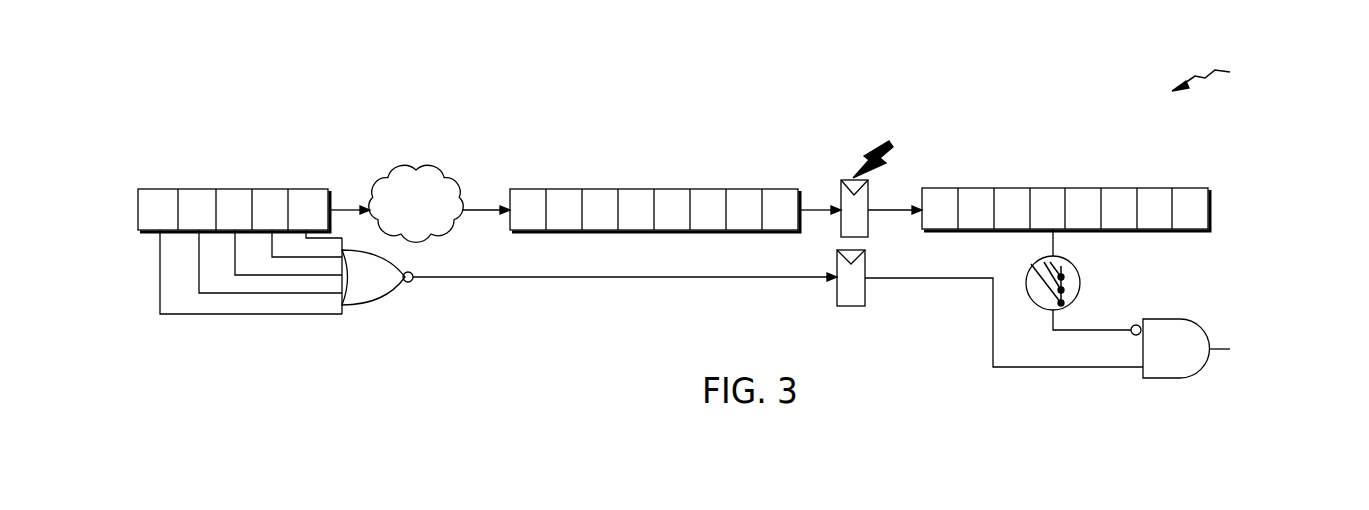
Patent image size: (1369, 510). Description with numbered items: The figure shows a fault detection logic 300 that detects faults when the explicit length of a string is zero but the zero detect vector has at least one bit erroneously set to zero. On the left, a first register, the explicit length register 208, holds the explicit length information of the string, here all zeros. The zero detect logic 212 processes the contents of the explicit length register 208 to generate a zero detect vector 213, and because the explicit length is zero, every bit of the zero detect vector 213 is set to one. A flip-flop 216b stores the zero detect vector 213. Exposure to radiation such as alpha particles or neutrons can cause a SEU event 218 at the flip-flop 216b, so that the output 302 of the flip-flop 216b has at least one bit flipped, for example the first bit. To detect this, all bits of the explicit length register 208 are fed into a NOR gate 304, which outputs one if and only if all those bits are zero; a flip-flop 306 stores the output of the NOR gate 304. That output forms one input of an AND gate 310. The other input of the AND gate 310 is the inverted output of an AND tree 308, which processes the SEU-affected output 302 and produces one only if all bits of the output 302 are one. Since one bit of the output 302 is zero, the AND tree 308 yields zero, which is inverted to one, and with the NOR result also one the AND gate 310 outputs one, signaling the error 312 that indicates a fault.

The fault detection logic 300 is at (1229, 75).
The explicit length register 208 is at (229, 189).
The zero detect logic 212 is at (405, 168).
The zero detect vector 213 is at (640, 189).
The flip-flop 216b is at (841, 190).
The SEU event 218 is at (870, 152).
The output of the flip-flop 302 is at (1050, 188).
The NOR gate 304 is at (383, 297).
The flip-flop 306 is at (851, 306).
The AND tree 308 is at (1073, 264).
The AND gate 310 is at (1190, 319).
The error signal 312 is at (1272, 336).